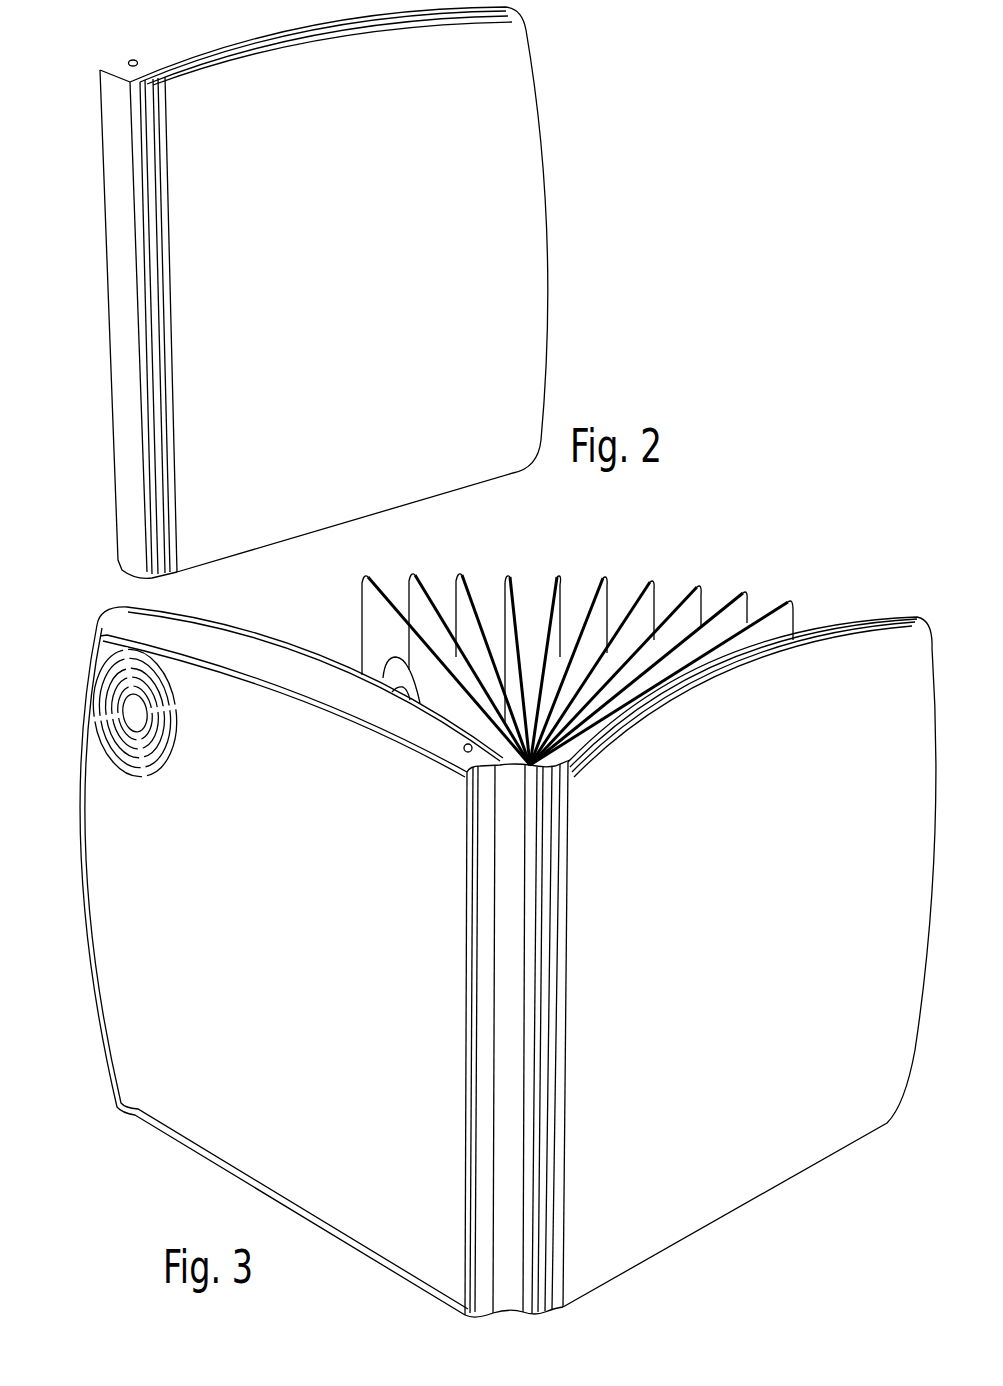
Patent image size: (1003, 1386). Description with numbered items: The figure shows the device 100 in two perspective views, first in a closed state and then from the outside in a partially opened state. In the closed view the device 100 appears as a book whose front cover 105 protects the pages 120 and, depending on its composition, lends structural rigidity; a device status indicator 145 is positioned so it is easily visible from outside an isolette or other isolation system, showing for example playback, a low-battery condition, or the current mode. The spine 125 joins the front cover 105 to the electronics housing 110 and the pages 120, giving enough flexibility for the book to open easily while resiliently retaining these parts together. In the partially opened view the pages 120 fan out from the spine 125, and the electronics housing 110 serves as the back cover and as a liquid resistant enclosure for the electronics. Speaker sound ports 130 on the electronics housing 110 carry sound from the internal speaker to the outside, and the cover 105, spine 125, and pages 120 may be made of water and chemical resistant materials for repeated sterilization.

In FIG. 2, the device 100 is at (567, 46).
In FIG. 2, the front cover 105 is at (507, 236).
In FIG. 2, the spine 125 is at (117, 375).
In FIG. 2, the device status indicator 145 is at (133, 58).
In FIG. 3, the electronics housing 110 is at (112, 1070).
In FIG. 3, the pages 120 is at (604, 576).
In FIG. 3, the speaker sound ports 130 is at (108, 668).